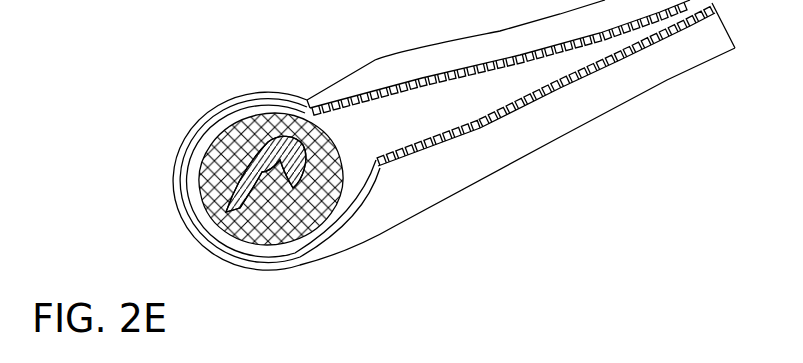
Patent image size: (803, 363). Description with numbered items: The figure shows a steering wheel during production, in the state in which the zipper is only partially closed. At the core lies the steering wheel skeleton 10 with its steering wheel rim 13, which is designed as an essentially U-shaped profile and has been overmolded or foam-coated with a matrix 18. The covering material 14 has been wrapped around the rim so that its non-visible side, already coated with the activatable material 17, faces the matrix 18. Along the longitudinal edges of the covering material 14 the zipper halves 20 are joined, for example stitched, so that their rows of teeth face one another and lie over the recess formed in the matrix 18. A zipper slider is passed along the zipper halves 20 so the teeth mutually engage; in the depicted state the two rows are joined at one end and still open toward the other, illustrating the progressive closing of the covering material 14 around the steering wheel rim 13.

The steering wheel skeleton 10 is at (189, 174).
The steering wheel rim 13 is at (238, 197).
The covering material 14 is at (247, 100).
The activatable material 17 is at (210, 128).
The matrix 18 is at (212, 180).
The zipper halves 20 is at (423, 78).